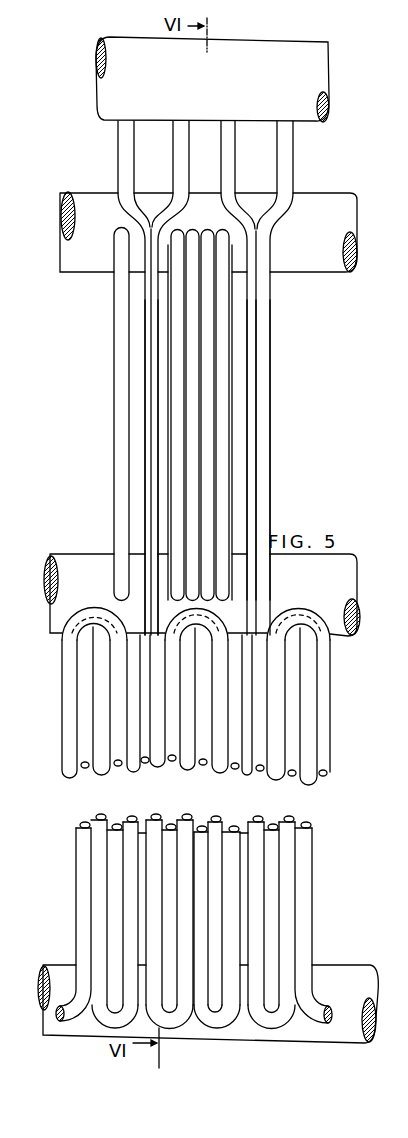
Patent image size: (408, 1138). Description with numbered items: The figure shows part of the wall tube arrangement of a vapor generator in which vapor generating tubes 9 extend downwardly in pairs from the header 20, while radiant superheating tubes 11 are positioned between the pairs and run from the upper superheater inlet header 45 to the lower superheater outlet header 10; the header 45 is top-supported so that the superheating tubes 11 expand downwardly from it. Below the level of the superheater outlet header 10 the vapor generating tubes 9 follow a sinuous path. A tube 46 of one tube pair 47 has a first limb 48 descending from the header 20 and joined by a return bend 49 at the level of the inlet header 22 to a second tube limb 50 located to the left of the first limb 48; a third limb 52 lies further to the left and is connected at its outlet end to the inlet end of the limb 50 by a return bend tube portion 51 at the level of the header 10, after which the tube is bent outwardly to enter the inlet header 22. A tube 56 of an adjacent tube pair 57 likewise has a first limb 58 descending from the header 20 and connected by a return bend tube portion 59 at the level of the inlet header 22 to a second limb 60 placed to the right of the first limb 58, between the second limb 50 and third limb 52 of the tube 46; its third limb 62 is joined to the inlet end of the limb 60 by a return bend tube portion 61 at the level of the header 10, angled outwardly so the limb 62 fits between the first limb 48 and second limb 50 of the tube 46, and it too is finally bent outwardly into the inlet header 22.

The vapor generating tubes 9 is at (159, 405).
The superheater outlet header 10 is at (333, 600).
The radiant superheating tubes 11 is at (186, 438).
The header 20 is at (322, 58).
The inlet header 22 is at (335, 980).
The superheater inlet header 45 is at (329, 218).
The tube 46 is at (240, 352).
The tube pair 47 is at (247, 304).
The first limb 48 is at (242, 375).
The return bend 49 is at (219, 1029).
The second tube limb 50 is at (200, 757).
The return bend tube portion 51 is at (177, 613).
The third limb 52 is at (175, 690).
The tube 56 is at (165, 322).
The tube pair 57 is at (160, 292).
The first limb 58 is at (170, 357).
The return bend tube portion 59 is at (166, 1016).
The second limb 60 is at (188, 720).
The return bend tube portion 61 is at (217, 617).
The third limb 62 is at (217, 720).